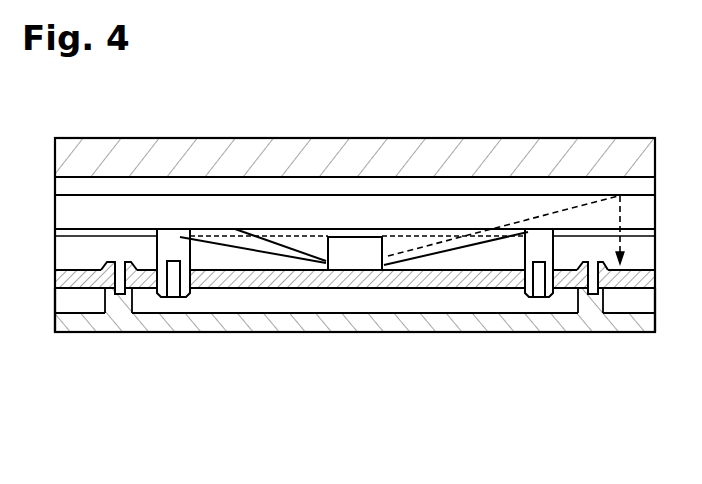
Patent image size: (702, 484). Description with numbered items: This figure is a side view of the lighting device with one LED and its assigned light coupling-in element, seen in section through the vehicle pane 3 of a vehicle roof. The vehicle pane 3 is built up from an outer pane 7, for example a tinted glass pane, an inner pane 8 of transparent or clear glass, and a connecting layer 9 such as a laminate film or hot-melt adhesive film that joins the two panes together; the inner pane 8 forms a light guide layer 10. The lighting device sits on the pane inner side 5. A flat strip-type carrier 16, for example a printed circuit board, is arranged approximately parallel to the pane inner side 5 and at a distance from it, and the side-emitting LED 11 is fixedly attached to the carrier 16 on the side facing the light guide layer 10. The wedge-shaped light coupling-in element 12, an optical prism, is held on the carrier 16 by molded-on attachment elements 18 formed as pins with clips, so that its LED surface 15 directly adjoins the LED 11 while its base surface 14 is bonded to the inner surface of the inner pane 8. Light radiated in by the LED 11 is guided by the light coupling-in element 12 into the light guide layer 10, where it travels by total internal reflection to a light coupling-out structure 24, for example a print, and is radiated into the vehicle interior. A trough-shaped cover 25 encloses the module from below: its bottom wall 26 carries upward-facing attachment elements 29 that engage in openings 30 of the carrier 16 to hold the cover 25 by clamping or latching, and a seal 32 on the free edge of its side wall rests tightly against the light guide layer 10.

The vehicle pane 3 is at (316, 128).
The pane inner side 5 is at (276, 246).
The outer pane 7 is at (298, 162).
The inner pane 8 is at (267, 213).
The connecting layer 9 is at (218, 188).
The light guide layer 10 is at (438, 213).
The LED 11 is at (349, 263).
The light coupling-in element 12 is at (250, 261).
The base surface 14 is at (397, 215).
The LED surface 15 is at (386, 266).
The carrier 16 is at (217, 280).
The attachment elements 18 is at (173, 247).
The light coupling-out structure 24 is at (492, 190).
The cover 25 is at (82, 343).
The bottom wall 26 is at (145, 322).
The attachment elements 29 is at (114, 246).
The openings 30 is at (120, 279).
The seal 32 is at (638, 234).